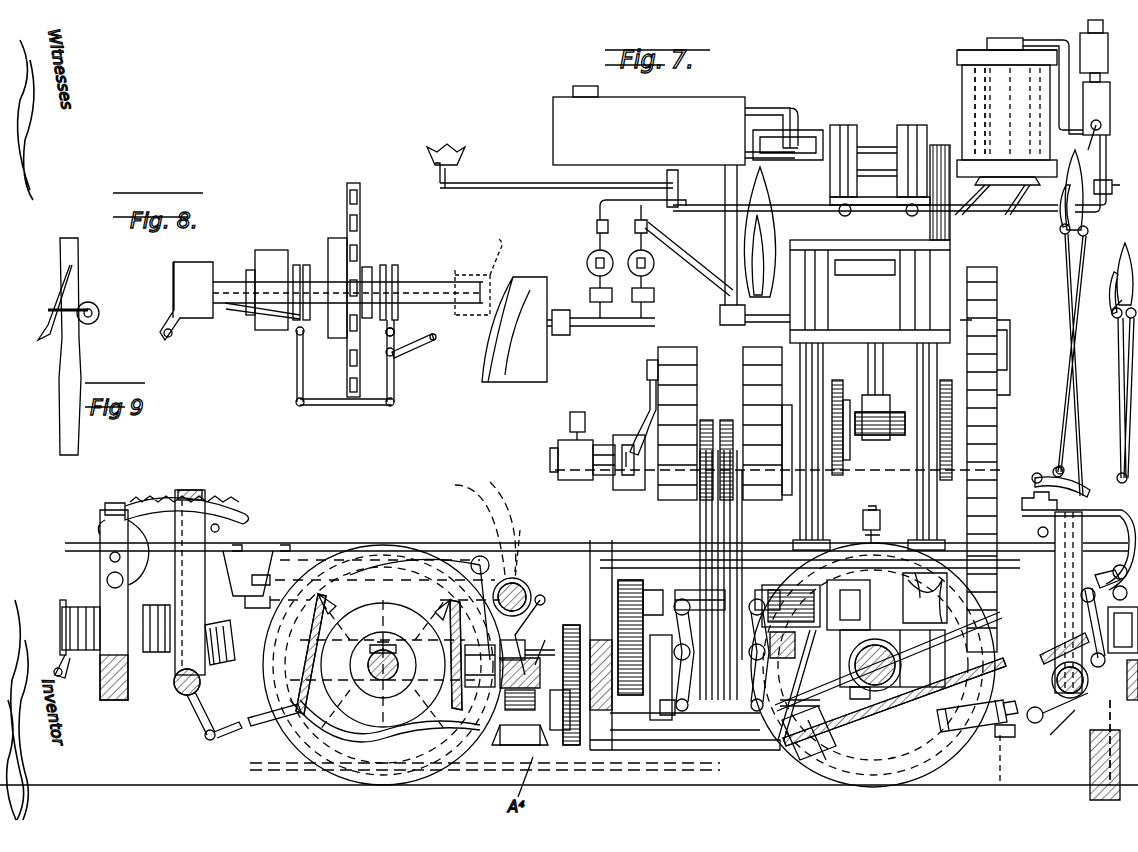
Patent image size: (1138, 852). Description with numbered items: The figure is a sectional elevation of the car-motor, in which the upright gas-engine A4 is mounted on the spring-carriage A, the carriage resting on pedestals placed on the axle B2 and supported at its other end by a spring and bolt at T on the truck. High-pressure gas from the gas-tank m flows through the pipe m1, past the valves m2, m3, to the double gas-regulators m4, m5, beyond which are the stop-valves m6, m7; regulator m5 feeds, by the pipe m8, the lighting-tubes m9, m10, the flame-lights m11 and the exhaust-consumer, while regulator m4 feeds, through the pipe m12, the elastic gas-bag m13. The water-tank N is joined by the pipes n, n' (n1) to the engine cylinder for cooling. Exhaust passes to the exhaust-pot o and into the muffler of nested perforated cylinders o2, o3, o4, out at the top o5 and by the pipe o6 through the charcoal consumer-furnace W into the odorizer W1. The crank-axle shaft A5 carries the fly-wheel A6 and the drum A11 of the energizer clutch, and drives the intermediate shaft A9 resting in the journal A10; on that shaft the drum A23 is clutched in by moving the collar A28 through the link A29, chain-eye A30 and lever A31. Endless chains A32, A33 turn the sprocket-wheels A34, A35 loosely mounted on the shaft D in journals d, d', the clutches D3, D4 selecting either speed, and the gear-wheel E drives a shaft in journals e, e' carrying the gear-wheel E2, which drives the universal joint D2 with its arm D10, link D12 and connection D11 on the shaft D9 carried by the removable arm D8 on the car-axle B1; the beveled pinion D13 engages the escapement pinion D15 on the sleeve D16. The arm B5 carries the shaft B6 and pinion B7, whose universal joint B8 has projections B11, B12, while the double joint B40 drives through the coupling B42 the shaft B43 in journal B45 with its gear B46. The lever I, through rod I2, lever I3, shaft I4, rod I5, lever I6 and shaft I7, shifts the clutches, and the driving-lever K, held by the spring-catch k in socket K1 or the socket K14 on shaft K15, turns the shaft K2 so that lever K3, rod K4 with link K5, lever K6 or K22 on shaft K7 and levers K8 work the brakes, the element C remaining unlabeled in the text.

In FIG. 9, the driving-lever K is at (72, 335).
In FIG. 7, the driving-lever K is at (1078, 260).
In FIG. 8, the shaft D is at (416, 295).
In FIG. 7, the shaft D is at (692, 604).
In FIG. 8, the universal joint D2 is at (186, 301).
In FIG. 7, the universal joint D2 is at (568, 737).
In FIG. 8, the gear-wheel E is at (270, 258).
In FIG. 7, the gear-wheel E is at (656, 647).
In FIG. 8, the clutch D3 is at (300, 263).
In FIG. 8, the sprocket-wheel A35 is at (334, 340).
In FIG. 8, the sprocket-wheel A34 is at (358, 204).
In FIG. 8, the clutch D4 is at (382, 256).
In FIG. 7, the clutch D4 is at (769, 594).
In FIG. 8, the rod I2 is at (415, 334).
In FIG. 8, the lever I3 is at (394, 365).
In FIG. 8, the short shaft I4 is at (394, 334).
In FIG. 8, the rod I5 is at (366, 404).
In FIG. 8, the lever I6 is at (297, 375).
In FIG. 8, the shaft I7 is at (298, 322).
In FIG. 8, the gas-tank m is at (514, 329).
In FIG. 7, the water-tank N is at (649, 125).
In FIG. 7, the pipe n1 is at (765, 108).
In FIG. 7, the pipe n' is at (784, 162).
In FIG. 7, the pipe n is at (755, 245).
In FIG. 7, the elastic gas-bag m13 is at (759, 232).
In FIG. 7, the flame-lights m11 is at (490, 183).
In FIG. 7, the pipe m8 is at (697, 205).
In FIG. 7, the stop-valve m6 is at (594, 227).
In FIG. 7, the stop-valve m7 is at (652, 227).
In FIG. 7, the gas-regulator m4 is at (588, 264).
In FIG. 7, the gas-regulator m5 is at (650, 264).
In FIG. 7, the valve m2 is at (590, 294).
In FIG. 7, the valve m3 is at (654, 294).
In FIG. 7, the pipe m1 is at (626, 326).
In FIG. 7, the pipe m12 is at (693, 258).
In FIG. 7, the lighting-tube m9 is at (842, 130).
In FIG. 7, the lighting-tube m10 is at (909, 128).
In FIG. 7, the cylinder o2 is at (960, 60).
In FIG. 7, the top o5 is at (975, 52).
In FIG. 7, the cylinder o3 is at (970, 85).
In FIG. 7, the tube o4 is at (967, 95).
In FIG. 7, the pipe o6 is at (1042, 38).
In FIG. 7, the odorizer W1 is at (1094, 51).
In FIG. 7, the consumer-furnace W is at (1097, 147).
In FIG. 7, the gas-engine A4 is at (870, 390).
In FIG. 7, the drum A23 is at (682, 360).
In FIG. 7, the drum A11 is at (764, 360).
In FIG. 7, the lever A31 is at (648, 365).
In FIG. 7, the chain-eye A30 is at (650, 384).
In FIG. 7, the link A29 is at (650, 423).
In FIG. 7, the loosely-mounted collar A28 is at (628, 442).
In FIG. 7, the intermediate shaft A9 is at (601, 452).
In FIG. 7, the journal A10 is at (556, 452).
In FIG. 7, the fly-wheel A6 is at (985, 408).
In FIG. 7, the exhaust-pot o is at (1012, 355).
In FIG. 7, the crank-axle shaft A5 is at (852, 470).
In FIG. 7, the lever I is at (1122, 414).
In FIG. 7, the spring-carriage A is at (596, 575).
In FIG. 7, the socket K14 is at (195, 500).
In FIG. 7, the socket K1 is at (210, 547).
In FIG. 7, the projection B12 is at (77, 662).
In FIG. 7, the universal joint B8 is at (180, 690).
In FIG. 7, the shaft K15 is at (211, 721).
In FIG. 7, the shaft B6 is at (240, 668).
In FIG. 7, the beveled pinion B7 is at (250, 723).
In FIG. 7, the beveled pinion D15 is at (371, 645).
In FIG. 7, the car-axle B1 is at (362, 677).
In FIG. 7, the removable arm B5 is at (300, 717).
In FIG. 7, the removable arm D8 is at (410, 682).
In FIG. 7, the shaft D9 is at (455, 682).
In FIG. 7, the connection D11 is at (470, 687).
In FIG. 7, the sleeve D16 is at (382, 642).
In FIG. 7, the beveled pinion D13 is at (455, 612).
In FIG. 7, the lever K22 is at (465, 519).
In FIG. 7, the lever K6 is at (485, 518).
In FIG. 7, the shaft K7 is at (510, 578).
In FIG. 7, the connecting-link D12 is at (517, 528).
In FIG. 7, the projecting arm D10 is at (540, 597).
In FIG. 7, the lever K8 is at (555, 592).
In FIG. 7, the gear-wheel E2 is at (530, 664).
In FIG. 7, the support point T is at (510, 747).
In FIG. 7, the gear-wheel B46 is at (603, 747).
In FIG. 7, the journal B45 is at (675, 747).
In FIG. 7, the journal d is at (617, 637).
In FIG. 7, the journal e is at (601, 675).
In FIG. 7, the journal e' is at (661, 677).
In FIG. 7, the endless chain A32 is at (694, 655).
In FIG. 7, the endless chain A33 is at (748, 675).
In FIG. 7, the journal d' is at (816, 619).
In FIG. 7, the shaft B43 is at (718, 747).
In FIG. 7, the universal coupling B42 is at (780, 747).
In FIG. 7, the axle B2 is at (873, 679).
In FIG. 7, the bracket C is at (893, 636).
In FIG. 7, the projection B11 is at (992, 715).
In FIG. 7, the adjustable link K5 is at (995, 747).
In FIG. 7, the rod K4 is at (1035, 737).
In FIG. 7, the double universal joint B40 is at (1130, 797).
In FIG. 7, the spring-catch k is at (1057, 554).
In FIG. 7, the shaft K2 is at (1072, 692).
In FIG. 7, the lever K3 is at (1052, 712).